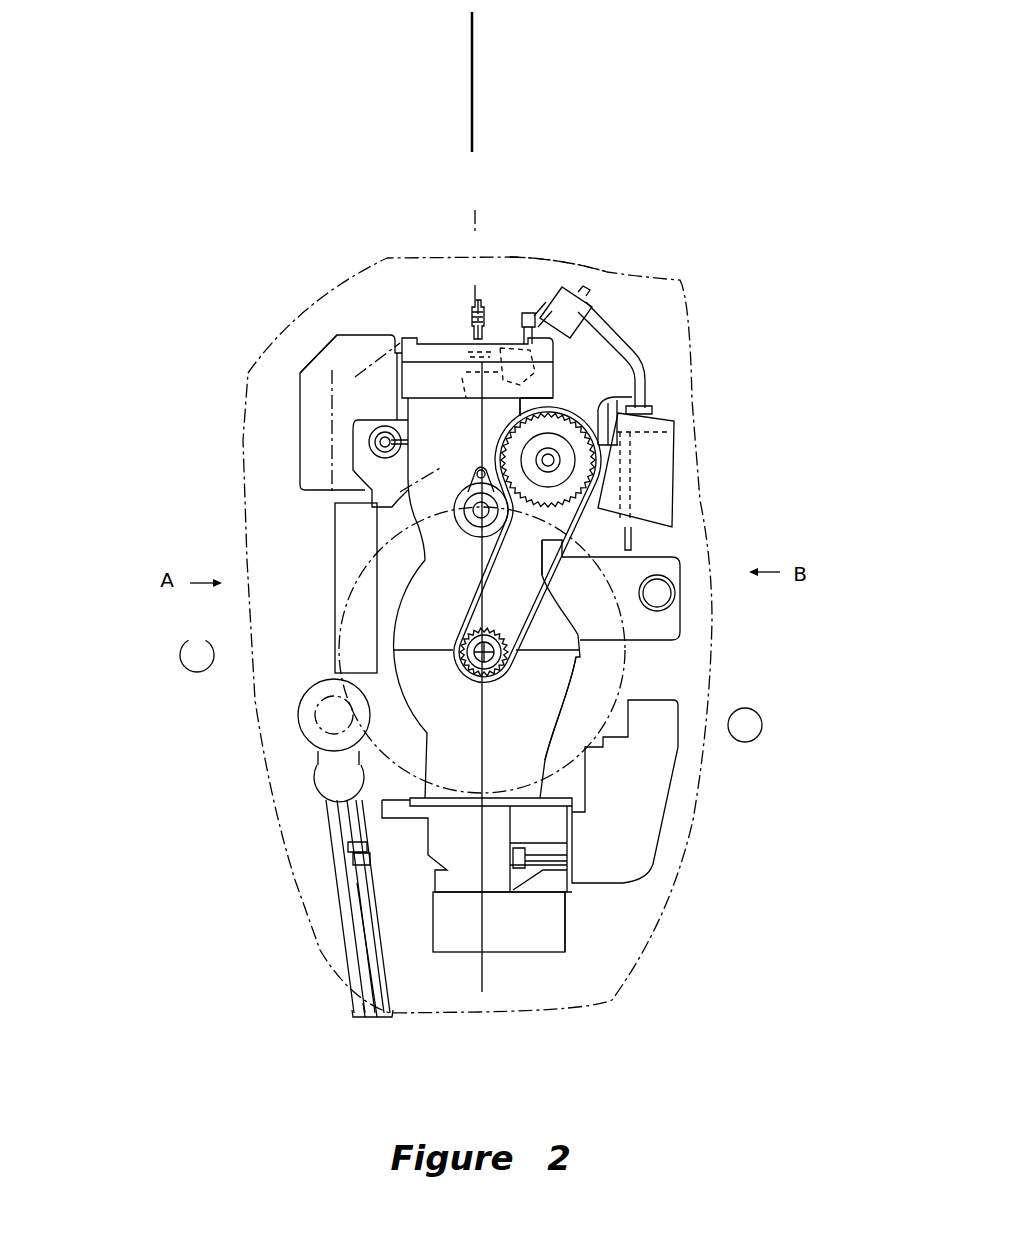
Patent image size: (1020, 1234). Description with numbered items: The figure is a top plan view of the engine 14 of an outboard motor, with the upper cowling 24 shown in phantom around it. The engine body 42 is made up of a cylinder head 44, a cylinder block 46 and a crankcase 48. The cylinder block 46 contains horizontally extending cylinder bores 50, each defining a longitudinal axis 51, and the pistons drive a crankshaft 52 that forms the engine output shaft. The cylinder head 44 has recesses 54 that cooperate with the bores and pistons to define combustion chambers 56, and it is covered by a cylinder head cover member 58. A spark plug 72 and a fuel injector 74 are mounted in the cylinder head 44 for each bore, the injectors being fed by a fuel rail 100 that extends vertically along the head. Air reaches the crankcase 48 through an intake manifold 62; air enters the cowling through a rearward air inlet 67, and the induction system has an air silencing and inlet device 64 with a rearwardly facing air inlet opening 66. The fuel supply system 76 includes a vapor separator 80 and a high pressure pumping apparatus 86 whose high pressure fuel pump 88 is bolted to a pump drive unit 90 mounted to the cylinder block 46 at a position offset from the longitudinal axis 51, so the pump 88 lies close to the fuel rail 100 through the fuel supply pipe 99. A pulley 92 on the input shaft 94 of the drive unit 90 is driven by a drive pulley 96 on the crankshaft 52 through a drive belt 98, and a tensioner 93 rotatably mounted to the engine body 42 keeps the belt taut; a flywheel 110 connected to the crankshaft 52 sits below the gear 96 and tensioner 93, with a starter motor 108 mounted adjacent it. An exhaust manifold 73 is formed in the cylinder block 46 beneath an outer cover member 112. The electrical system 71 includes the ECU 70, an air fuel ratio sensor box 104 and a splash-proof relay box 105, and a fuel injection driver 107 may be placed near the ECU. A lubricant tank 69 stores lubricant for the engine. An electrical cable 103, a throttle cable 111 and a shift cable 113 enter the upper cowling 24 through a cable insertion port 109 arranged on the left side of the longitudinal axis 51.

The longitudinal axis 51 is at (470, 61).
The engine 14 is at (538, 92).
The spark plug 72 is at (474, 300).
The cylinder bore 50 is at (462, 378).
The engine body 42 is at (501, 327).
The fuel injector 74 is at (536, 316).
The fuel rail 100 is at (566, 296).
The fuel supply pipe 99 is at (607, 318).
The cowling 24 is at (683, 273).
The air inlet 67 is at (353, 373).
The splash-proof box 105 is at (318, 353).
The tensioner 93 is at (330, 517).
The cylinder head cover member 58 is at (443, 343).
The combustion chamber 56 is at (520, 356).
The recess 54 is at (520, 374).
The cylinder head 44 is at (548, 380).
The pump drive unit 90 is at (540, 394).
The air fuel ratio sensor box 104 is at (347, 446).
The outer cover member 112 is at (618, 426).
The fuel supply system 76 is at (868, 370).
The high pressure pumping apparatus 86 is at (790, 448).
The input shaft 94 is at (556, 462).
The high pressure fuel pump 88 is at (652, 497).
The fuel injection driver 107 is at (640, 512).
The cylinder block 46 is at (423, 600).
The pulley 92 is at (640, 541).
The exhaust manifold 73 is at (553, 552).
The electrical system 71 is at (112, 568).
The ECU 70 is at (335, 612).
The lubricant tank 69 is at (673, 573).
The drive belt 98 is at (560, 622).
The crankcase 48 is at (630, 741).
The crankshaft 52 is at (476, 676).
The drive pulley 96 is at (533, 644).
The starter motor 108 is at (297, 722).
The flywheel 110 is at (358, 765).
The vapor separator 80 is at (655, 793).
The intake manifold 62 is at (490, 828).
The electrical cable 103 is at (340, 882).
The shift cable 113 is at (377, 914).
The throttle cable 111 is at (365, 958).
The cable insertion port 109 is at (368, 1020).
The air silencing and inlet device 64 is at (470, 943).
The air inlet opening 66 is at (553, 936).